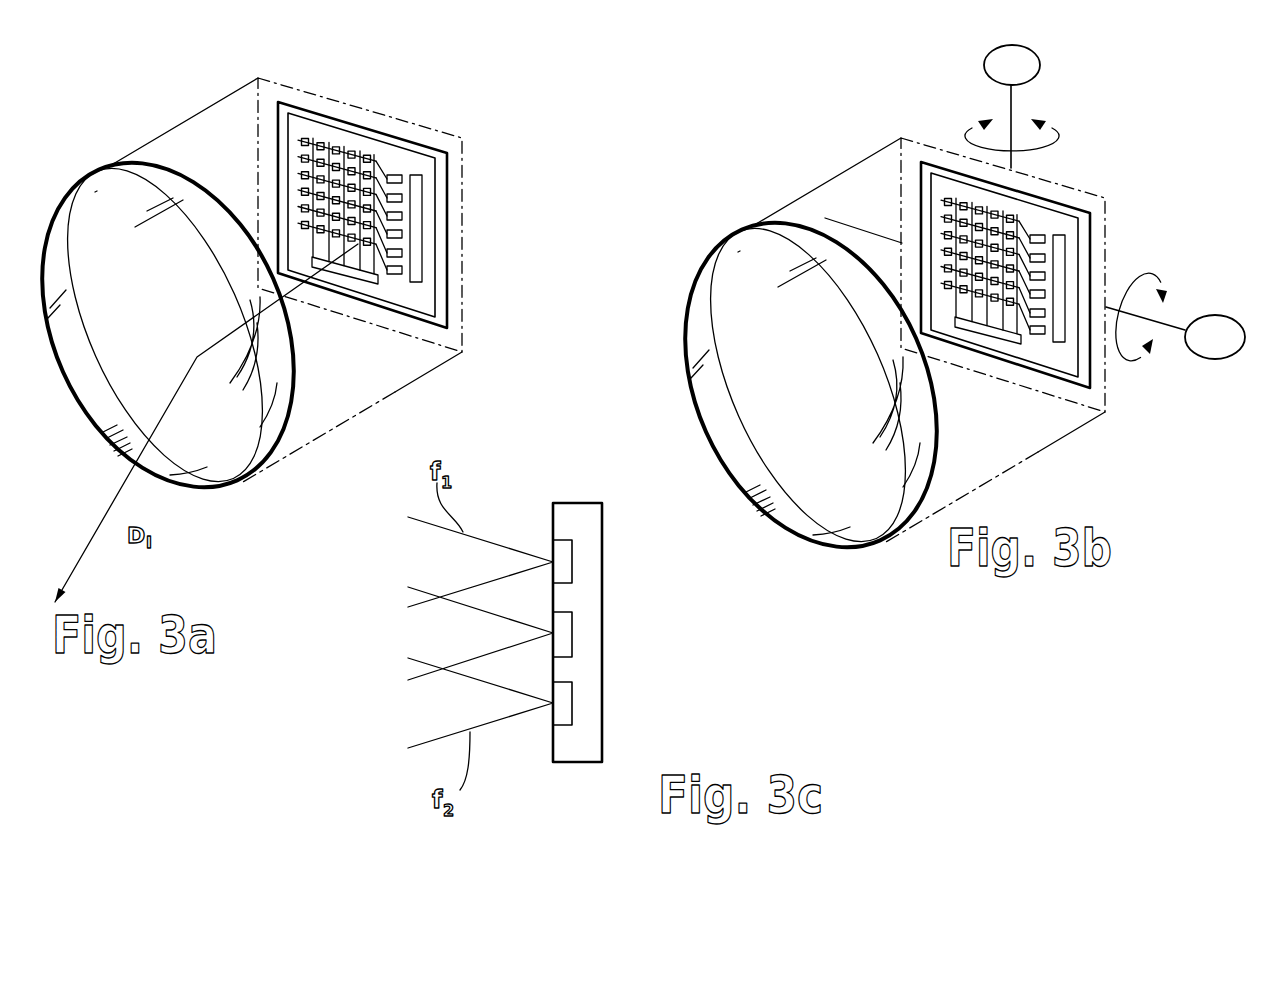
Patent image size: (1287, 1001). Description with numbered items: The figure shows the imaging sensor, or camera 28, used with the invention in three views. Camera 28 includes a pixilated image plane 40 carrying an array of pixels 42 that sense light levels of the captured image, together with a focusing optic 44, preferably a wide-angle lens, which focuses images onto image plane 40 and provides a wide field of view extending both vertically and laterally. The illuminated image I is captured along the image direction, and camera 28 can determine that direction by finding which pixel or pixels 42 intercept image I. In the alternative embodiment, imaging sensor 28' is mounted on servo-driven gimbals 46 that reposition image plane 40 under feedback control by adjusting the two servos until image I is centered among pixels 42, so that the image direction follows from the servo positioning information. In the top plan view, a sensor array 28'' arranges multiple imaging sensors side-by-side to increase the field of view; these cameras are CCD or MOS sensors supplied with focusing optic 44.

In FIG. 3A, the camera 28 is at (258, 329).
In FIG. 3C, the camera 28 is at (616, 631).
In FIG. 3B, the imaging sensor 28' is at (904, 328).
In FIG. 3C, the sensor array 28'' is at (515, 594).
In FIG. 3A, the pixilated image plane 40 is at (400, 133).
In FIG. 3B, the pixilated image plane 40 is at (1062, 385).
In FIG. 3A, the pixels 42 is at (352, 157).
In FIG. 3B, the pixels 42 is at (1010, 307).
In FIG. 3A, the focusing optic 44 is at (243, 488).
In FIG. 3B, the focusing optic 44 is at (697, 298).
In FIG. 3B, the servo-driven gimbals 46 is at (1035, 80).